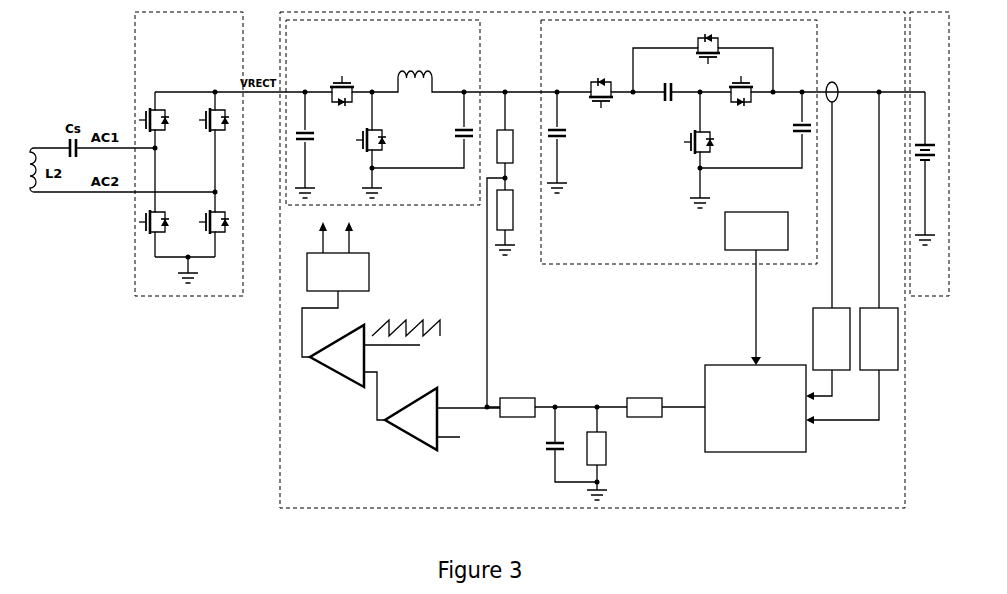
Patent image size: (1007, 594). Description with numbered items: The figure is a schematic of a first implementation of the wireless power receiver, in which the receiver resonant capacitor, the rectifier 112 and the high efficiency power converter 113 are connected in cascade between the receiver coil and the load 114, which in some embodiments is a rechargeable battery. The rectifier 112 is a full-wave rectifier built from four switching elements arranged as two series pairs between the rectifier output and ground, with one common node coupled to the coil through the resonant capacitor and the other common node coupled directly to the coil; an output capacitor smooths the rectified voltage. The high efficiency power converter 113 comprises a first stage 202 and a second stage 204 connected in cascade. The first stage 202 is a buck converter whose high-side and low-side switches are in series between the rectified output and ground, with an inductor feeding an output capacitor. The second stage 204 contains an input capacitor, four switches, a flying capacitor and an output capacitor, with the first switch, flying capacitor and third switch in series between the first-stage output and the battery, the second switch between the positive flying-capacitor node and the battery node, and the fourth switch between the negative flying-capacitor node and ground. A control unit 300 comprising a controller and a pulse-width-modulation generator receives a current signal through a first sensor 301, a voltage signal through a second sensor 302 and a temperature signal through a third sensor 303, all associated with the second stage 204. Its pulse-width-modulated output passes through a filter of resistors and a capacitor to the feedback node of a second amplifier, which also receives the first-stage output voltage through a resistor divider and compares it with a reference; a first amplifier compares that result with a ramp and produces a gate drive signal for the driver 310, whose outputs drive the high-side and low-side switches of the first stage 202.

The rectifier 112 is at (218, 290).
The high efficiency power converter 113 is at (592, 260).
The load 114 is at (919, 287).
The first stage 202 is at (444, 200).
The second stage 204 is at (661, 142).
The control unit 300 is at (749, 453).
The first sensor 301 is at (842, 330).
The second sensor 302 is at (890, 330).
The third sensor 303 is at (747, 245).
The driver 310 is at (329, 288).